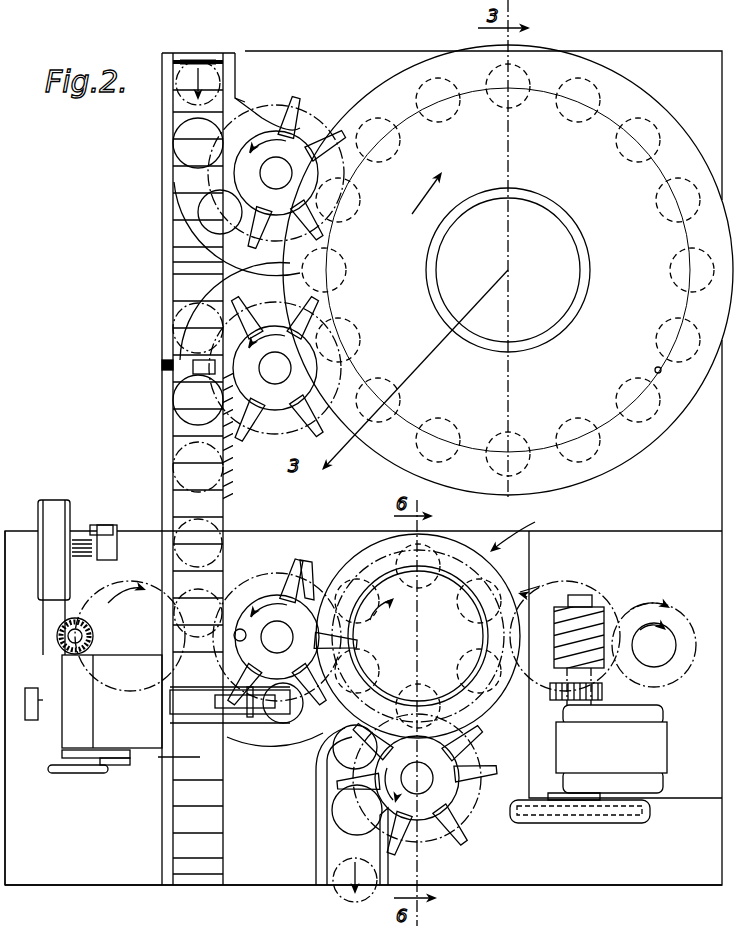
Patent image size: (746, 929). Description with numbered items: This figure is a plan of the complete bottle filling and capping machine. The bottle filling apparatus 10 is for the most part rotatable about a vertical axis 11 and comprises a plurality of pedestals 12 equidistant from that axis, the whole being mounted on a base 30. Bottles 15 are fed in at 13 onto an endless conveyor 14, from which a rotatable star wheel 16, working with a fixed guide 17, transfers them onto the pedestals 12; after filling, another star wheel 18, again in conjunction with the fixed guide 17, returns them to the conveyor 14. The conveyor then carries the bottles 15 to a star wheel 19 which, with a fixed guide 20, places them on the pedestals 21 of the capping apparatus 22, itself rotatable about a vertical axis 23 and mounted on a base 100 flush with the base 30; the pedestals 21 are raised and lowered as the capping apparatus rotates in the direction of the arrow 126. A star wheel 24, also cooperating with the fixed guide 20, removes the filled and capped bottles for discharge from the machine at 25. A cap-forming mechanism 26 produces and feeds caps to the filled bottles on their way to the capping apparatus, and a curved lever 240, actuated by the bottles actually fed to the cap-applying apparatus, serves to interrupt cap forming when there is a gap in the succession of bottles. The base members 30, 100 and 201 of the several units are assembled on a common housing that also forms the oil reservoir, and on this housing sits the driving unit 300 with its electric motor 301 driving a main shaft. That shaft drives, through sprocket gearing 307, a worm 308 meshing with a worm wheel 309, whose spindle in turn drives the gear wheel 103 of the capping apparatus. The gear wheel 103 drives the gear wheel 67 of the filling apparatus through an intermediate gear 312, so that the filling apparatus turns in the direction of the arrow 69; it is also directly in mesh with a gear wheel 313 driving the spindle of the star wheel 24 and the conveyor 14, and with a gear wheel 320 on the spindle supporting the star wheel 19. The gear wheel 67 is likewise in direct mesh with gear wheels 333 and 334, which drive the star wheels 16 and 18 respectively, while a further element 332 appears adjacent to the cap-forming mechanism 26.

The bottle filling apparatus 10 is at (475, 41).
The vertical axis 11 is at (509, 270).
The pedestals 12 is at (462, 108).
The bottle feed point 13 is at (198, 60).
The endless conveyor 14 is at (173, 112).
The bottles 15 is at (188, 197).
The rotatable star wheel 16 is at (268, 136).
The fixed guide 17 is at (208, 262).
The star wheel 18 is at (277, 403).
The star wheel 19 is at (265, 595).
The fixed guide 20 is at (316, 763).
The pedestals 21 is at (355, 625).
The capping apparatus 22 is at (439, 619).
The vertical axis 23 is at (418, 637).
The star wheel 24 is at (462, 836).
The discharge point 25 is at (348, 878).
The cap-forming mechanism 26 is at (146, 752).
The base 30 is at (288, 62).
The gear wheel 67 is at (660, 368).
The arrow 69 is at (429, 191).
The base 100 is at (528, 872).
The gear wheel 103 is at (380, 575).
The arrow 126 is at (385, 613).
The base member 201 is at (33, 852).
The curved lever 240 is at (269, 651).
The driving unit 300 is at (712, 560).
The electric motor 301 is at (668, 728).
The sprocket gearing 307 is at (548, 698).
The worm 308 is at (598, 585).
The worm wheel 309 is at (680, 602).
The intermediate gear 312 is at (511, 528).
The gear wheel 313 is at (478, 752).
The gear wheel 320 is at (290, 573).
The feeder wheel path 332 is at (122, 588).
The gear wheel 333 is at (312, 118).
The gear wheel 334 is at (285, 450).